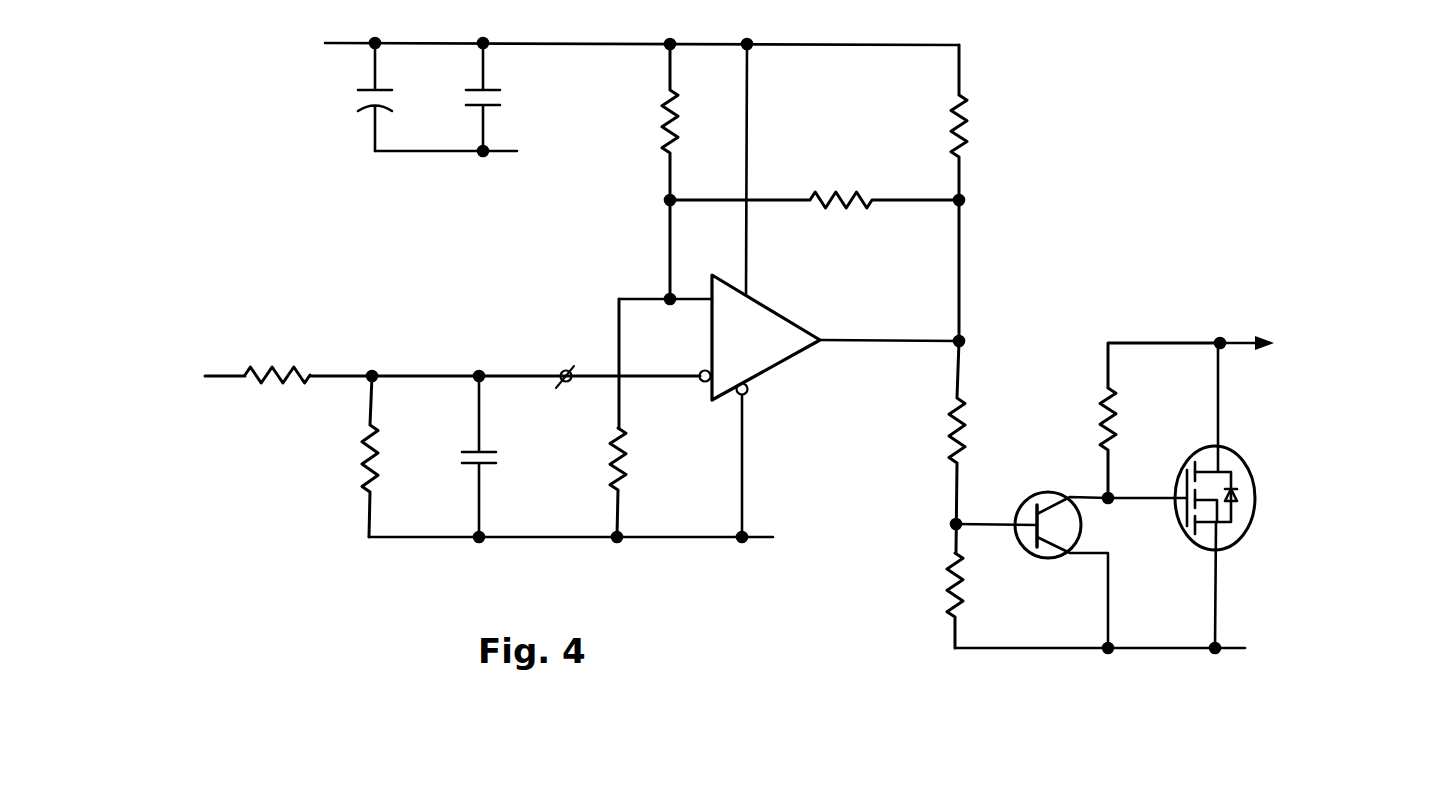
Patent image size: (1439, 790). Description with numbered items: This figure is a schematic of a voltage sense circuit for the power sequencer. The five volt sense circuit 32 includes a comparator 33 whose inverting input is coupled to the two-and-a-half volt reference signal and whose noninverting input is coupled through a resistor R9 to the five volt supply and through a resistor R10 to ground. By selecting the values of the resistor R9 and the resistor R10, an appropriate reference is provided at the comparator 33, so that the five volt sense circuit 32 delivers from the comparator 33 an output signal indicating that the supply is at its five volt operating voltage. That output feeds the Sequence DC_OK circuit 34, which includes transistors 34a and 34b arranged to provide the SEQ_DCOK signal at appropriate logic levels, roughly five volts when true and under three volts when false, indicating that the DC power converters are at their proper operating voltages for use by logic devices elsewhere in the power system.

The 5 volt sense circuit 32 is at (374, 216).
The comparator 33 is at (774, 308).
The Sequence DC_OK circuit 34 is at (1052, 667).
The transistor 34a is at (1031, 480).
The transistor 34b is at (1258, 452).
The resistor R9 is at (662, 135).
The resistor R10 is at (624, 462).